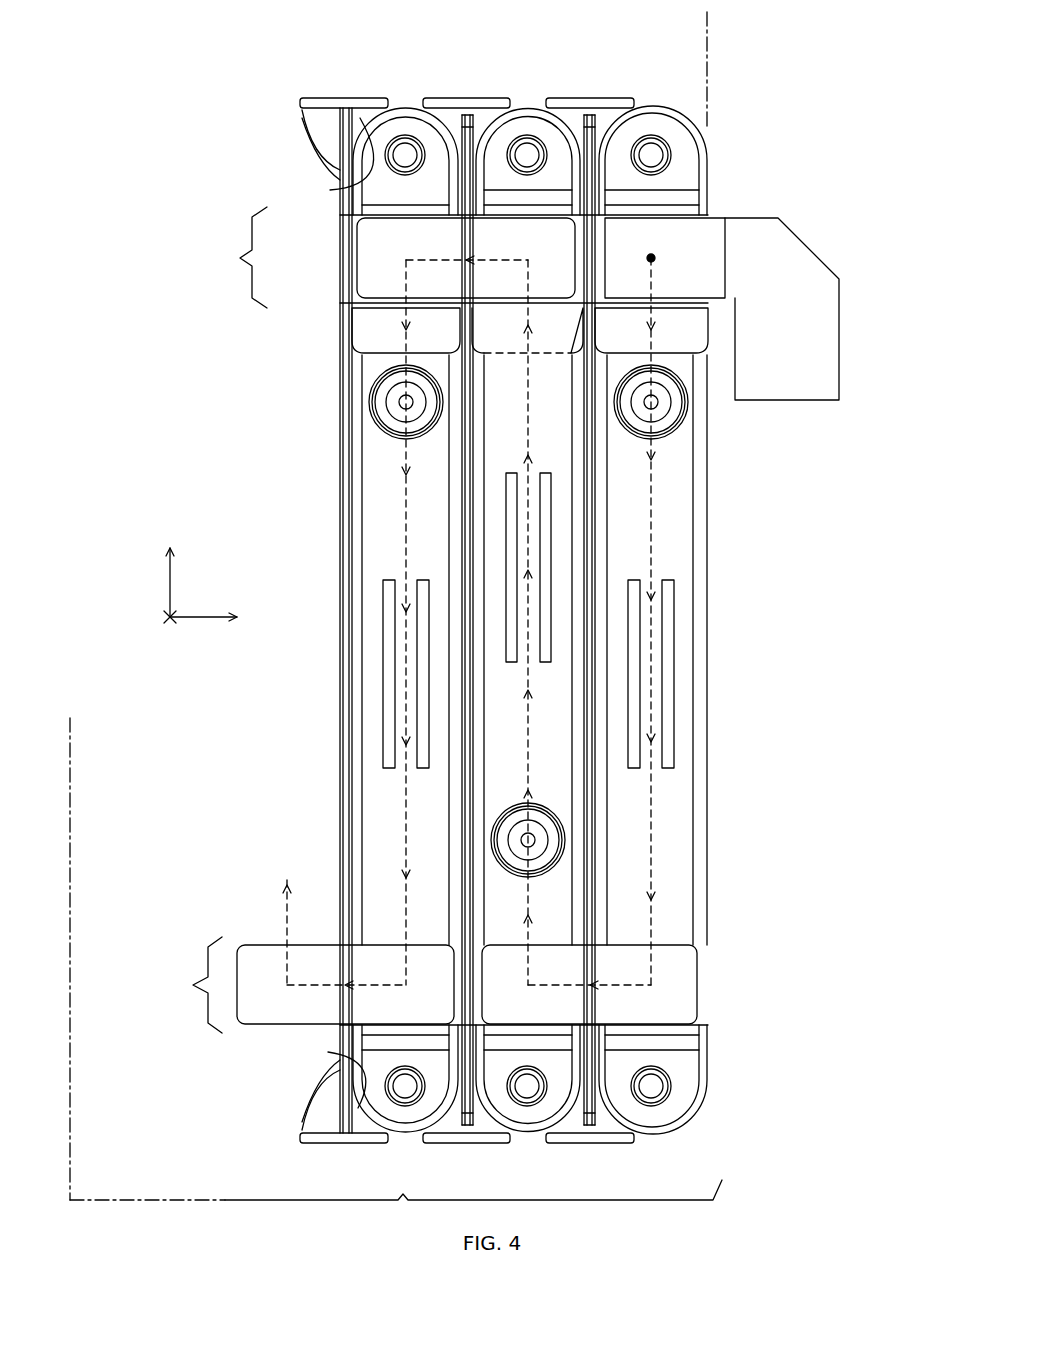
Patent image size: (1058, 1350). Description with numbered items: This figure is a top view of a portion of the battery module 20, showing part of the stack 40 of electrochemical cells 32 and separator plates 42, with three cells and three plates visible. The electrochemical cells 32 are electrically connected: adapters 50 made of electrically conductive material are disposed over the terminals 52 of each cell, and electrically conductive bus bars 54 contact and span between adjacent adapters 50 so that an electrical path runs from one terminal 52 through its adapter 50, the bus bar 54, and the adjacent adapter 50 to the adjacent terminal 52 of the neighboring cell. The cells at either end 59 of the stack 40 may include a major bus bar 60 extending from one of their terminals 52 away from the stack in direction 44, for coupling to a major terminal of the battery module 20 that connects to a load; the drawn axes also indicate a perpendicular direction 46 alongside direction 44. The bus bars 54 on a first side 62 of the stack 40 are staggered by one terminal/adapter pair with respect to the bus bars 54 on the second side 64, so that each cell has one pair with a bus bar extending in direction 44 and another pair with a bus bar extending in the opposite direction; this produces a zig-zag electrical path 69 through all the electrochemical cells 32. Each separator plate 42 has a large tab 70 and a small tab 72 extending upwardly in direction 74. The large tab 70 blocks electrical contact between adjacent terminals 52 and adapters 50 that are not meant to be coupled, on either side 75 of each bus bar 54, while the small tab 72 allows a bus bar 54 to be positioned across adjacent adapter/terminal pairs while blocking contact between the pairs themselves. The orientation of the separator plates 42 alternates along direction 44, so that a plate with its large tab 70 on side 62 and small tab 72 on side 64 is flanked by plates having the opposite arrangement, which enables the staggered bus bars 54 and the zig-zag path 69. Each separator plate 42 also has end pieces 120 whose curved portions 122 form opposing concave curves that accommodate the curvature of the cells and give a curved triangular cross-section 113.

The battery module 20 is at (533, 610).
The electrochemical cell 32 is at (692, 470).
The stack 40 is at (473, 1207).
The separator plate 42 is at (322, 100).
The direction 44 is at (200, 617).
The longitudinal direction 46 is at (170, 592).
The adapter 50 is at (406, 125).
The terminal 52 is at (662, 152).
The bus bar 54 is at (372, 276).
The end of the stack 59 is at (709, 60).
The major bus bar 60 is at (781, 252).
The first side of the stack 62 is at (239, 257).
The second side of the stack 64 is at (193, 985).
The zig-zag electrical path 69 is at (530, 375).
The large tab 70 is at (330, 124).
The small tab 72 is at (470, 118).
The direction 74 is at (170, 628).
The side of the bus bar 75 is at (363, 251).
The curved triangular cross-section 113 is at (352, 112).
The end piece 120 is at (492, 626).
The curved portion 122 is at (329, 613).